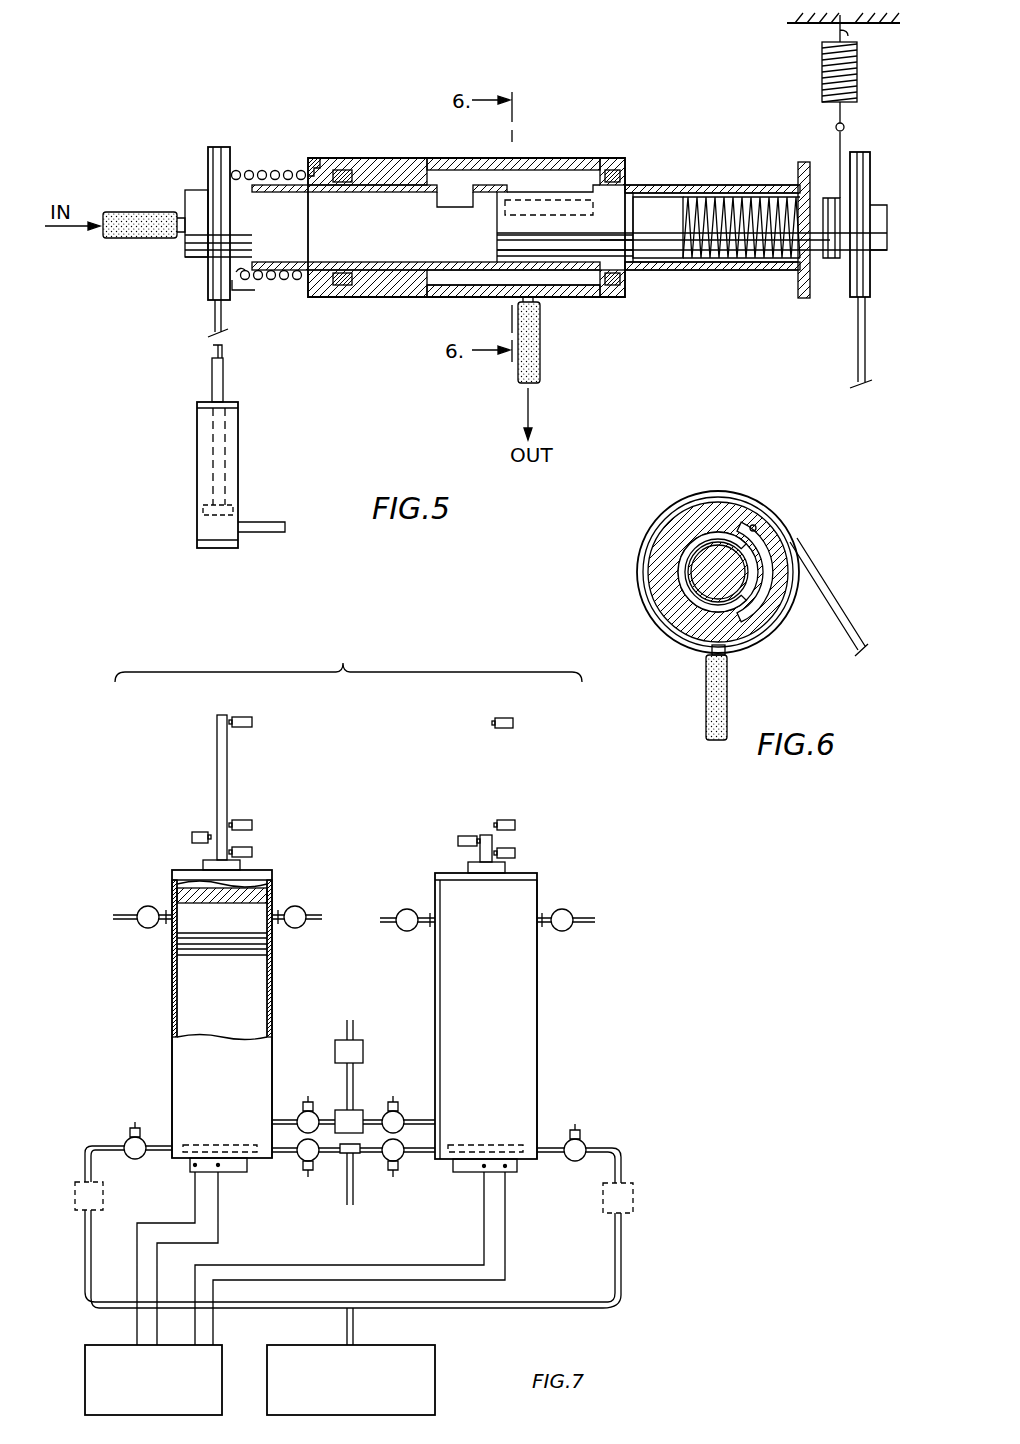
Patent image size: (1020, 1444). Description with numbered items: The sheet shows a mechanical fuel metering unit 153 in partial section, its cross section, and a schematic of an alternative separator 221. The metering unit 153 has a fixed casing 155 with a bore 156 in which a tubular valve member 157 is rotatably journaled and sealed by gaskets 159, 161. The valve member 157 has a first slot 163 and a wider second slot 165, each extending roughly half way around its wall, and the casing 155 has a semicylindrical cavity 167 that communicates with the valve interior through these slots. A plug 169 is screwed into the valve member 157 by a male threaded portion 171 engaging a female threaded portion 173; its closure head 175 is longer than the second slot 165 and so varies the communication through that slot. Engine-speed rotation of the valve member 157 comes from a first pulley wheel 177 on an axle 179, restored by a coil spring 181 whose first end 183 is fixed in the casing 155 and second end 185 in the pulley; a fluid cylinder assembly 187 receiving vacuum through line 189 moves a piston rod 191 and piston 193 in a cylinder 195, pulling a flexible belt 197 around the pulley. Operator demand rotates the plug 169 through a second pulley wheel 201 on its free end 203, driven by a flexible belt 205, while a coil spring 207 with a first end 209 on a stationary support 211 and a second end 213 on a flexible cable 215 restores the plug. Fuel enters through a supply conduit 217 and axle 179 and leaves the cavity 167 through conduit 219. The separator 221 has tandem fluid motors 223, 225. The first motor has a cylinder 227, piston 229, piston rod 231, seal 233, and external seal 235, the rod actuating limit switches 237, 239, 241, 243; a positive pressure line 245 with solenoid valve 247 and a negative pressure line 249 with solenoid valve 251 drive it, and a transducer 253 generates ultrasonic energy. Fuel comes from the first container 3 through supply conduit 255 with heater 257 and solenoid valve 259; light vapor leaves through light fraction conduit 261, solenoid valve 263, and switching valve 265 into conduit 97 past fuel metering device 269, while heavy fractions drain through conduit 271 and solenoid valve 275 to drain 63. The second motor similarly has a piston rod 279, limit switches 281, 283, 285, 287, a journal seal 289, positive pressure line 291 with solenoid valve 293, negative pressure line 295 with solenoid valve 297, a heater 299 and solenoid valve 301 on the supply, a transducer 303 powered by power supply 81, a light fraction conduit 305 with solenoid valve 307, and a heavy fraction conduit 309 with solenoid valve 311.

In FIG. 7, the first container 3 is at (436, 1350).
In FIG. 7, the drain 63 is at (355, 1200).
In FIG. 7, the power supply 81 is at (85, 1350).
In FIG. 7, the conduit 97 is at (356, 1086).
In FIG. 5, the metering unit 153 is at (648, 136).
In FIG. 5, the fixed casing 155 is at (545, 158).
In FIG. 6, the fixed casing 155 is at (713, 505).
In FIG. 5, the bore 156 is at (368, 185).
In FIG. 5, the tubular valve member 157 is at (660, 186).
In FIG. 6, the tubular valve member 157 is at (770, 636).
In FIG. 5, the gasket 159 is at (343, 170).
In FIG. 5, the gasket 161 is at (611, 170).
In FIG. 5, the first slot 163 is at (440, 208).
In FIG. 5, the second slot 165 is at (505, 215).
In FIG. 6, the second slot 165 is at (700, 605).
In FIG. 5, the semicylindrical cavity 167 is at (588, 286).
In FIG. 6, the semicylindrical cavity 167 is at (755, 528).
In FIG. 5, the plug 169 is at (657, 232).
In FIG. 6, the plug 169 is at (705, 580).
In FIG. 5, the male threaded portion 171 is at (760, 270).
In FIG. 5, the female threaded portion 173 is at (724, 270).
In FIG. 5, the closure head 175 is at (642, 270).
In FIG. 6, the closure head 175 is at (695, 555).
In FIG. 5, the first pulley wheel 177 is at (228, 147).
In FIG. 5, the axle 179 is at (188, 260).
In FIG. 5, the coil spring 181 is at (274, 170).
In FIG. 5, the first end 183 is at (310, 158).
In FIG. 5, the second end 185 is at (255, 290).
In FIG. 5, the fluid cylinder assembly 187 is at (248, 427).
In FIG. 5, the line 189 is at (276, 522).
In FIG. 5, the piston rod 191 is at (224, 375).
In FIG. 5, the piston 193 is at (203, 506).
In FIG. 5, the cylinder 195 is at (239, 455).
In FIG. 5, the flexible belt 197 is at (212, 320).
In FIG. 5, the second pulley wheel 201 is at (870, 168).
In FIG. 5, the free end 203 is at (888, 232).
In FIG. 5, the flexible belt 205 is at (866, 330).
In FIG. 5, the coil spring 207 is at (858, 70).
In FIG. 5, the first end 209 is at (848, 32).
In FIG. 5, the stationary support 211 is at (803, 25).
In FIG. 5, the second end 213 is at (842, 113).
In FIG. 5, the flexible cable 215 is at (835, 140).
In FIG. 5, the supply conduit 217 is at (118, 238).
In FIG. 5, the conduit 219 is at (540, 340).
In FIG. 7, the separator 221 is at (628, 940).
In FIG. 7, the fluid motor 223 is at (284, 971).
In FIG. 7, the fluid motor 225 is at (550, 1001).
In FIG. 7, the cylinder 227 is at (273, 1005).
In FIG. 7, the piston 229 is at (210, 957).
In FIG. 7, the piston rod 231 is at (217, 745).
In FIG. 7, the seal 233 is at (258, 895).
In FIG. 7, the external seal 235 is at (240, 865).
In FIG. 7, the limit switch 237 is at (252, 850).
In FIG. 7, the limit switch 239 is at (192, 836).
In FIG. 7, the limit switch 241 is at (252, 820).
In FIG. 7, the limit switch 243 is at (252, 720).
In FIG. 7, the positive pressure line 245 is at (120, 912).
In FIG. 7, the solenoid valve 247 is at (140, 928).
In FIG. 7, the negative pressure line 249 is at (308, 912).
In FIG. 7, the solenoid valve 251 is at (298, 928).
In FIG. 7, the transducer 253 is at (240, 1173).
In FIG. 7, the supply conduit 255 is at (310, 1306).
In FIG. 7, the heater 257 is at (75, 1190).
In FIG. 7, the solenoid valve 259 is at (130, 1136).
In FIG. 7, the light fraction conduit 261 is at (296, 1118).
In FIG. 7, the solenoid valve 263 is at (306, 1102).
In FIG. 7, the switching valve 265 is at (340, 1110).
In FIG. 7, the fuel metering device 269 is at (363, 1045).
In FIG. 7, the conduit 271 is at (296, 1148).
In FIG. 7, the solenoid valve 275 is at (308, 1177).
In FIG. 7, the piston rod 279 is at (493, 842).
In FIG. 7, the limit switch 281 is at (515, 853).
In FIG. 7, the limit switch 283 is at (462, 836).
In FIG. 7, the limit switch 285 is at (515, 823).
In FIG. 7, the limit switch 287 is at (495, 722).
In FIG. 7, the journal seal 289 is at (492, 874).
In FIG. 7, the positive pressure line 291 is at (390, 916).
In FIG. 7, the solenoid valve 293 is at (410, 908).
In FIG. 7, the negative pressure line 295 is at (580, 915).
In FIG. 7, the solenoid valve 297 is at (563, 932).
In FIG. 7, the heater 299 is at (633, 1195).
In FIG. 7, the solenoid valve 301 is at (583, 1142).
In FIG. 7, the transducer 303 is at (517, 1173).
In FIG. 7, the conduit 305 is at (418, 1120).
In FIG. 7, the solenoid valve 307 is at (395, 1103).
In FIG. 7, the conduit 309 is at (420, 1150).
In FIG. 7, the solenoid valve 311 is at (396, 1177).